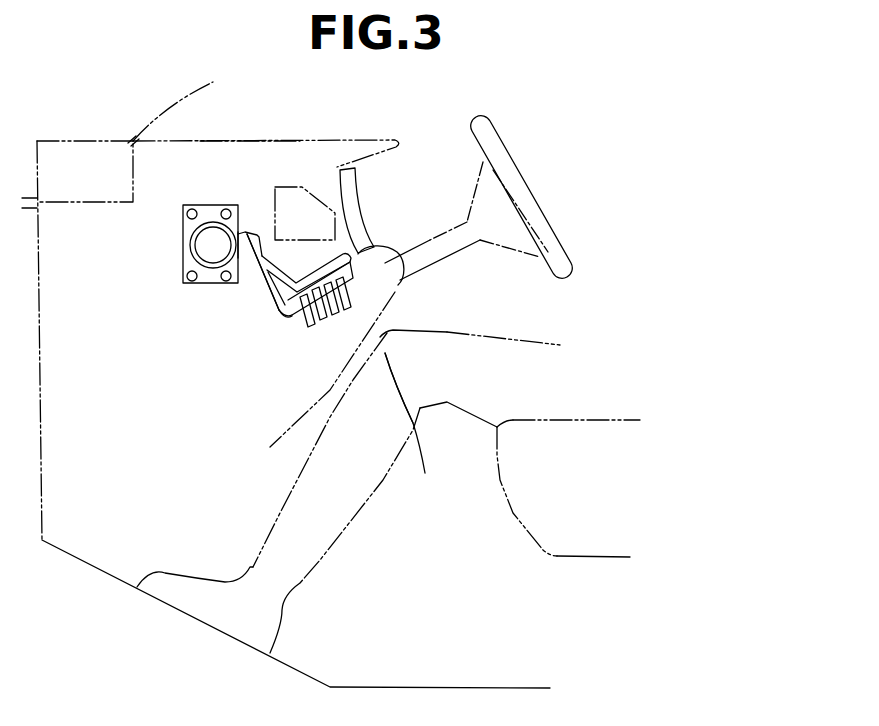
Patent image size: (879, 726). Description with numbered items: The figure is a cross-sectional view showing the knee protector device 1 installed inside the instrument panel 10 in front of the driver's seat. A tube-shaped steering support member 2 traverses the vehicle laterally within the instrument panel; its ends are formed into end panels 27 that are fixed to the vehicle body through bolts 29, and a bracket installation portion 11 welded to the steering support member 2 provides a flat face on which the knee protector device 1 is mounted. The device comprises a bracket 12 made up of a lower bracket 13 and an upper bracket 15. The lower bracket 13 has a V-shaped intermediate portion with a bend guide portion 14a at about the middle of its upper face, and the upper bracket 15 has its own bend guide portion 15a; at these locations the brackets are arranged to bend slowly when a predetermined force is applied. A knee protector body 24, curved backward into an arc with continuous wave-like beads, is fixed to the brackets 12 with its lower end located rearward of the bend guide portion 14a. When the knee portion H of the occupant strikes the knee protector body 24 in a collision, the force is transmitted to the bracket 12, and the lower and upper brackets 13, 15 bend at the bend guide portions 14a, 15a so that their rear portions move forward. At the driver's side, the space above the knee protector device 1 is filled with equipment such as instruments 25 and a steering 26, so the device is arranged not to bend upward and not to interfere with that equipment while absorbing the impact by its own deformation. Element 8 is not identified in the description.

The knee protector device 1 is at (260, 306).
The steering support member 2 is at (183, 242).
The instrument panel member 8 is at (305, 188).
The instrument panel 10 is at (240, 141).
The bracket installation portion 11 is at (255, 233).
The bracket 12 is at (449, 236).
The lower bracket 13 is at (342, 302).
The bend guide portion 14a is at (286, 320).
The upper bracket 15 is at (342, 280).
The bend guide portion 15a is at (289, 303).
The knee protector body 24 is at (330, 333).
The instruments 25 is at (360, 202).
The steering 26 is at (533, 197).
The end panel 27 is at (183, 267).
The bolts 29 is at (223, 208).
The knee portion H is at (406, 429).